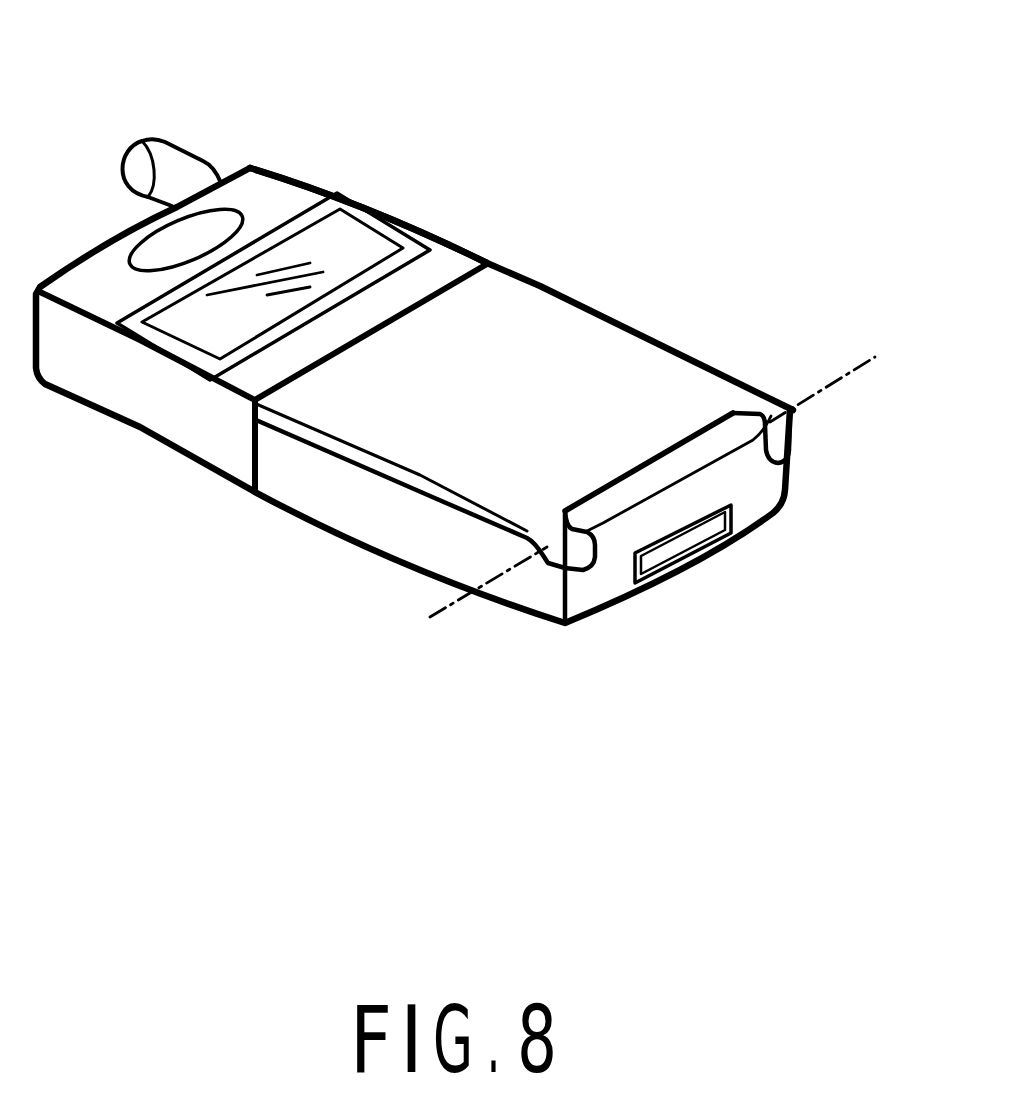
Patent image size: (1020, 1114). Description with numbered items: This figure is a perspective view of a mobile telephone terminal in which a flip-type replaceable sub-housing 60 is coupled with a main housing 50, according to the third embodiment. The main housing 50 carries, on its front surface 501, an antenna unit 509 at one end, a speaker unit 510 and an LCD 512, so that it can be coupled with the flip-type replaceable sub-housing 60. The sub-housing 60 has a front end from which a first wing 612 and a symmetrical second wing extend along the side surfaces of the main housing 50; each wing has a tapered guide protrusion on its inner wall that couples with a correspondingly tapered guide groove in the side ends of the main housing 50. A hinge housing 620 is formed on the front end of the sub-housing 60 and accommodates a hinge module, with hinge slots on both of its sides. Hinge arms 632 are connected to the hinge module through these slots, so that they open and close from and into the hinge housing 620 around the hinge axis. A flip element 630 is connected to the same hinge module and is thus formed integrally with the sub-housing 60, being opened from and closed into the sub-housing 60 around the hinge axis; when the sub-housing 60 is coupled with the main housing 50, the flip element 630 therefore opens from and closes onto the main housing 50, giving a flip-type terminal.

The main housing 50 is at (473, 258).
The front surface 501 is at (270, 188).
The antenna unit 509 is at (160, 178).
The speaker unit 510 is at (183, 238).
The LCD 512 is at (330, 243).
The flip-type replaceable sub-housing 60 is at (630, 627).
The first wing 612 is at (393, 525).
The hinge housing 620 is at (678, 457).
The flip element 630 is at (525, 340).
The hinge arms 632 is at (762, 410).